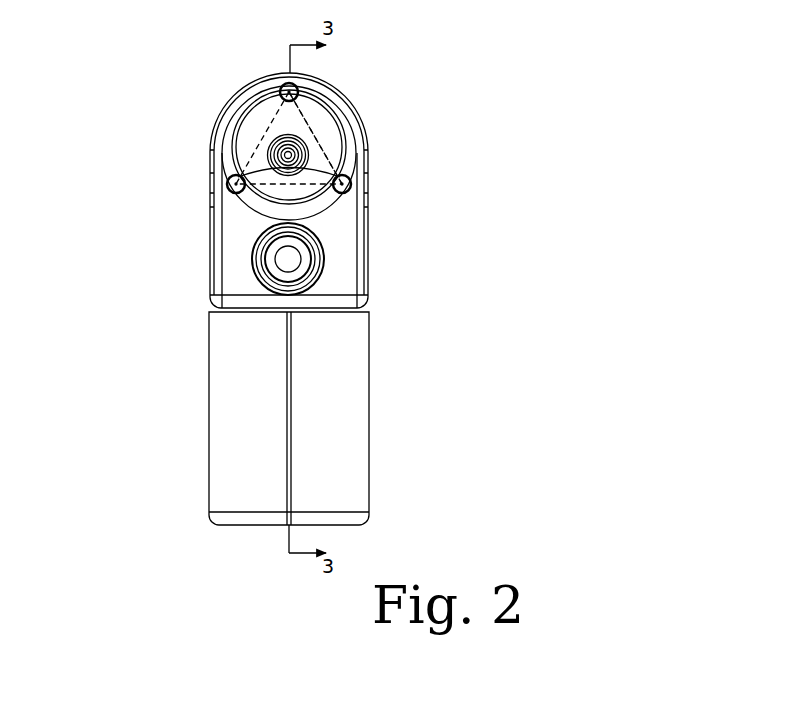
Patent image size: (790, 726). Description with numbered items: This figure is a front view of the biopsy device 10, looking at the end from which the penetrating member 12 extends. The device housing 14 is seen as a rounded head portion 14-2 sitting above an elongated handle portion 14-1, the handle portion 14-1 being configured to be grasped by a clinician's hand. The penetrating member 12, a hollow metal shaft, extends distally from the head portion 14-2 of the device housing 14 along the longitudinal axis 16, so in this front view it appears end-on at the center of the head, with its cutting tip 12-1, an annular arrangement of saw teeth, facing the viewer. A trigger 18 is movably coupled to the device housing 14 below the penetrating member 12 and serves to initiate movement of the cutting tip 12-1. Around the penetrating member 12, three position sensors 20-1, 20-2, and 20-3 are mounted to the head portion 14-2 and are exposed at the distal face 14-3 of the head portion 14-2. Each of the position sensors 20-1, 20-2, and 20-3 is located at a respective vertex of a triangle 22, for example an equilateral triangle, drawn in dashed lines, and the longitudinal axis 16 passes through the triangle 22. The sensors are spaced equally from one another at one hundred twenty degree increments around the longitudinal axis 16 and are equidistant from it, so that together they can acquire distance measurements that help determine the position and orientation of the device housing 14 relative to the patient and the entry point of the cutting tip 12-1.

The biopsy device 10 is at (351, 269).
The penetrating member 12 is at (301, 122).
The cutting tip 12-1 is at (338, 168).
The device housing 14 is at (272, 299).
The handle portion 14-1 is at (370, 403).
The head portion 14-2 is at (208, 140).
The distal face 14-3 is at (333, 100).
The longitudinal axis 16 is at (236, 176).
The trigger 18 is at (310, 266).
The position sensor 20-1 is at (295, 84).
The position sensor 20-2 is at (228, 190).
The position sensor 20-3 is at (351, 186).
The triangle 22 is at (318, 133).